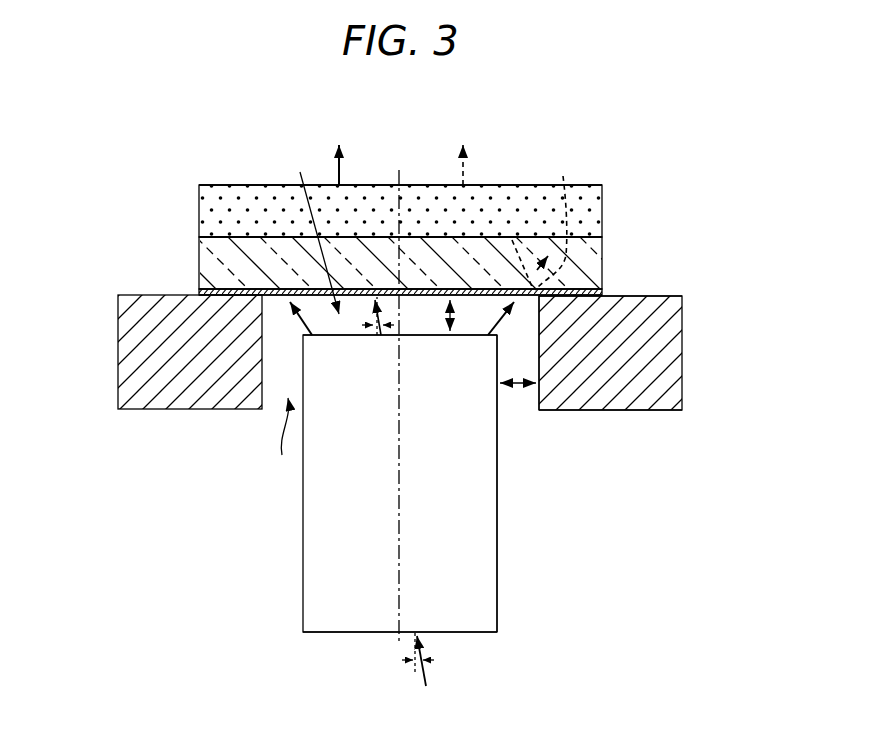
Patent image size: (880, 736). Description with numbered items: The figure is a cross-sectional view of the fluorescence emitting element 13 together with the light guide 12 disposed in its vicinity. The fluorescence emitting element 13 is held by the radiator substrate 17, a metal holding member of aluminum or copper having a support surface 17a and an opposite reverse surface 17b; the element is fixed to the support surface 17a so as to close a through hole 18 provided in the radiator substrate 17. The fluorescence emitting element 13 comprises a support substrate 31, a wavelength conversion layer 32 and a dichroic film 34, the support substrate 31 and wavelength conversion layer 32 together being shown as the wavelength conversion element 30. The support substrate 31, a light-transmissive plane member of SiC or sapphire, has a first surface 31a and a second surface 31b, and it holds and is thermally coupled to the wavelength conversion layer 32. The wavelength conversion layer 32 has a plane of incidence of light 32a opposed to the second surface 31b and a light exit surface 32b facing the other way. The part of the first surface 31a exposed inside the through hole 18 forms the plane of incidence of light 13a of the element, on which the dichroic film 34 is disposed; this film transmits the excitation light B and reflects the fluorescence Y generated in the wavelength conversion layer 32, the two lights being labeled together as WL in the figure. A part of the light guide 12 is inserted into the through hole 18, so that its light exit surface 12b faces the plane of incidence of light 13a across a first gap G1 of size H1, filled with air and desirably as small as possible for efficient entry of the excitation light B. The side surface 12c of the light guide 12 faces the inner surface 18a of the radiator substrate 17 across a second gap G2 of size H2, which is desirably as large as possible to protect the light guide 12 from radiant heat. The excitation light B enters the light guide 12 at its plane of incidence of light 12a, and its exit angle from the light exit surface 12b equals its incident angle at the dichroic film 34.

The light guide 12 is at (439, 508).
The plane of incidence of light 12a is at (327, 633).
The light exit surface 12b is at (482, 334).
The side surface 12c is at (498, 432).
The fluorescence emitting element 13 is at (392, 221).
The plane of incidence of light 13a is at (270, 297).
The radiator substrate 17 is at (653, 370).
The support surface 17a is at (676, 296).
The reverse surface 17b is at (655, 411).
The through hole 18 is at (341, 414).
The inner surface 18a is at (263, 398).
The wavelength conversion element 30 is at (445, 216).
The support substrate 31 is at (420, 246).
The first surface 31a is at (208, 290).
The second surface 31b is at (217, 236).
The wavelength conversion layer 32 is at (594, 200).
The plane of incidence of light 32a is at (203, 241).
The light exit surface 32b is at (225, 184).
The dichroic film 34 is at (606, 292).
The excitation light B is at (339, 163).
The fluorescence Y is at (516, 213).
The white light WL is at (421, 389).
The first gap G1 is at (311, 230).
The second gap G2 is at (284, 442).
The size of the first gap H1 is at (450, 316).
The size of the second gap H2 is at (518, 380).